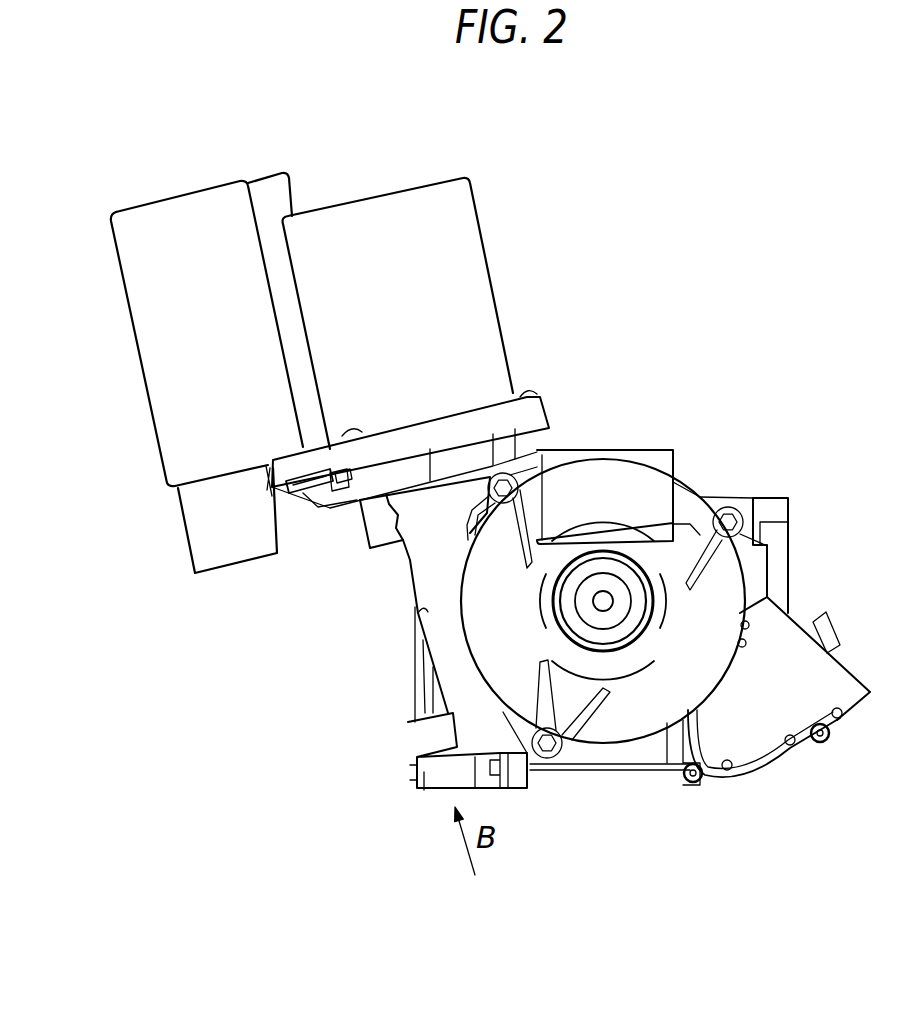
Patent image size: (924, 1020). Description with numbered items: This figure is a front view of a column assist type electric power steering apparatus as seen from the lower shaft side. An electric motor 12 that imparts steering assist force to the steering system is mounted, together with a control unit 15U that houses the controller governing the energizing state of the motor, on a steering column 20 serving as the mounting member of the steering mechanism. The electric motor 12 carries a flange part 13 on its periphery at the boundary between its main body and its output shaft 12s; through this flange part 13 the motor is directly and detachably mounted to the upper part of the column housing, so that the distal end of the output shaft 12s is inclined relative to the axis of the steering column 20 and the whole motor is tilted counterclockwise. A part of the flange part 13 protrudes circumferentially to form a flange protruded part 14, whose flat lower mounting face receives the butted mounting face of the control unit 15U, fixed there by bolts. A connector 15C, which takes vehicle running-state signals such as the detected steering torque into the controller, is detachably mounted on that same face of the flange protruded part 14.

The electric motor 12 is at (372, 190).
The output shaft 12s is at (613, 578).
The flange part 13 is at (517, 418).
The flange protruded part 14 is at (295, 497).
The control unit 15U is at (189, 188).
The connector 15C is at (238, 563).
The steering column 20 is at (805, 556).